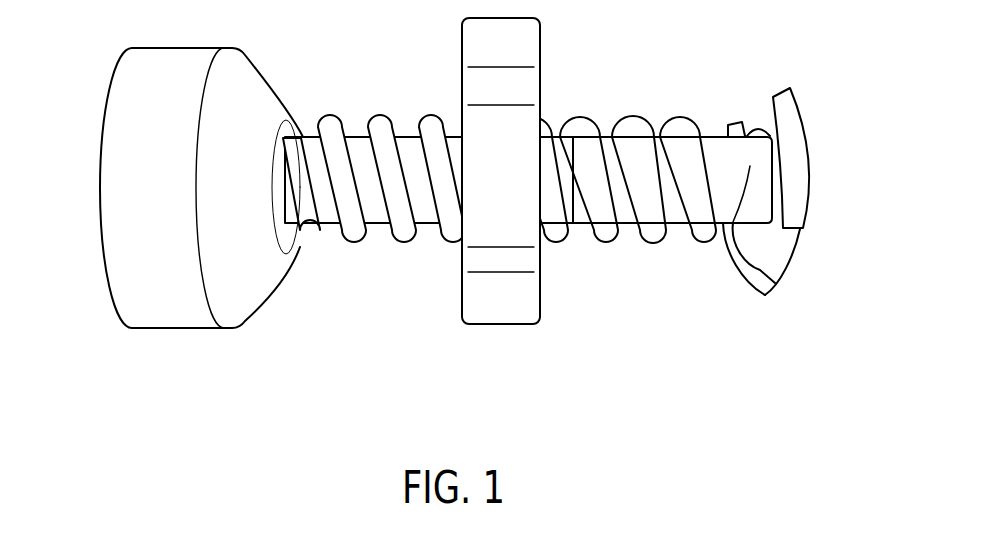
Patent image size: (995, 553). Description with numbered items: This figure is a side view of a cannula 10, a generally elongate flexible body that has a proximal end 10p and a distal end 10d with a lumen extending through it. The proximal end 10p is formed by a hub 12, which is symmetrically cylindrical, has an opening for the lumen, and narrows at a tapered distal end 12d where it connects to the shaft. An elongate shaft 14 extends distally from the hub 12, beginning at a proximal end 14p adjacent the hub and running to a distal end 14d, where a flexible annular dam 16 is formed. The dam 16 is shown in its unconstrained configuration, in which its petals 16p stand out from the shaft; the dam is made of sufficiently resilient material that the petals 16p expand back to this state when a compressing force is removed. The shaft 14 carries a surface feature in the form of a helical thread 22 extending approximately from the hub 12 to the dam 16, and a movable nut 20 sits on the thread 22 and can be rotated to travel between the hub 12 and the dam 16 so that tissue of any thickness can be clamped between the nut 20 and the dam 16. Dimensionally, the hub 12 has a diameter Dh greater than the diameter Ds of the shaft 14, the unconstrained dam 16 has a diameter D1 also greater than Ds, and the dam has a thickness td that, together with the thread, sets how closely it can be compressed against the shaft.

The cannula 10 is at (552, 357).
The proximal end 10p is at (133, 330).
The distal end 10d is at (762, 297).
The hub 12 is at (175, 330).
The tapered distal end 12d is at (280, 110).
The elongate shaft 14 is at (366, 130).
The proximal end of spring 14p is at (308, 244).
The distal end 14d is at (743, 121).
The flexible dam 16 is at (783, 90).
The petals 16p is at (768, 297).
The movable nut 20 is at (533, 26).
The helical thread 22 is at (405, 244).
The thickness td is at (729, 226).
The diameter Dh is at (97, 48).
The diameter Ds is at (574, 182).
The diameter D1 is at (812, 88).